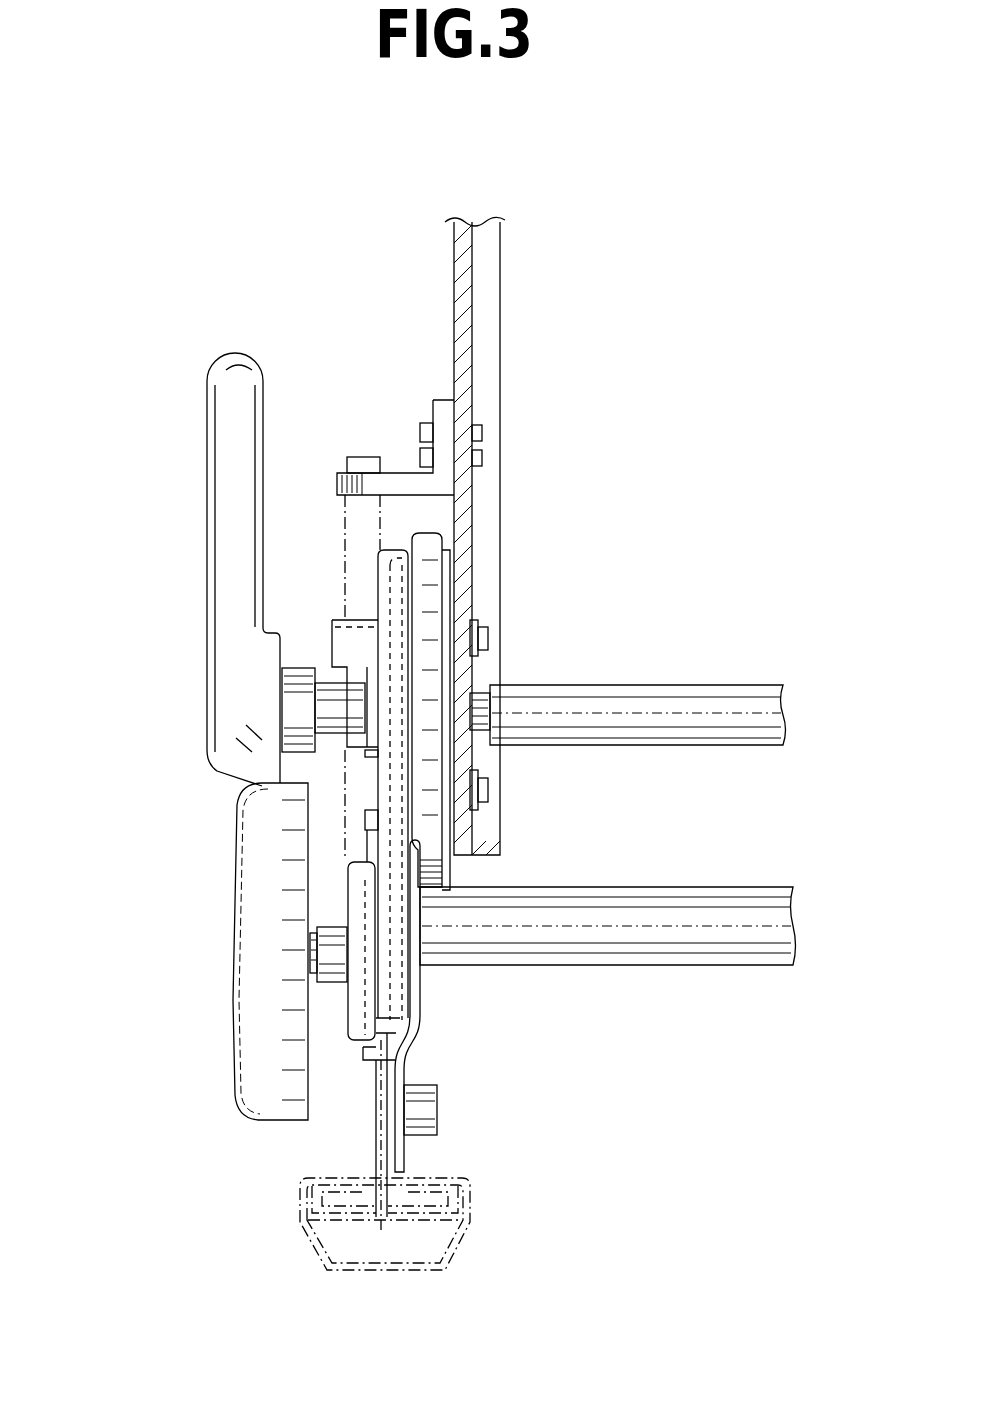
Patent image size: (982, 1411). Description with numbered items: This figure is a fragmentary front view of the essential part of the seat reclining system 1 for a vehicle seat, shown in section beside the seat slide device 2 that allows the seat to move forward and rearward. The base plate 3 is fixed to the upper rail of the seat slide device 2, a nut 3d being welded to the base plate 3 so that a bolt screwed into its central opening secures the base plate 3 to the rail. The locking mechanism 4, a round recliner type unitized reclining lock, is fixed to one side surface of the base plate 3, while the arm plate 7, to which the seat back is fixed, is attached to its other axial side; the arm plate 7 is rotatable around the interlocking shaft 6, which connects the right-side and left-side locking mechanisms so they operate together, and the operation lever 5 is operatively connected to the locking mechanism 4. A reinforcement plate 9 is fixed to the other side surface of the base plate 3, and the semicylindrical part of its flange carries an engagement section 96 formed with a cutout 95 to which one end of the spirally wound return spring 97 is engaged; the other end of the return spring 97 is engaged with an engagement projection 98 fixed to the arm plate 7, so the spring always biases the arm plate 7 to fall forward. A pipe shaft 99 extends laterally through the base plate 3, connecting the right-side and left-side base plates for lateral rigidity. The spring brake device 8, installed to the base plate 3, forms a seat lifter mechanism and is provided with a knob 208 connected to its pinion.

The seat reclining system 1 is at (725, 390).
The seat slide device 2 is at (458, 1250).
The base plate 3 is at (420, 1017).
The nut 3d is at (437, 1113).
The locking mechanism 4 is at (429, 528).
The operation lever 5 is at (233, 353).
The interlocking shaft 6 is at (718, 685).
The arm plate 7 is at (454, 250).
The spring brake device 8 is at (337, 1012).
The reinforcement plate 9 is at (362, 605).
The cutout 95 is at (352, 713).
The engagement section 96 is at (333, 626).
The return spring 97 is at (357, 457).
The engagement projection 98 is at (433, 413).
The pipe shaft 99 is at (752, 965).
The knob 208 is at (232, 1015).